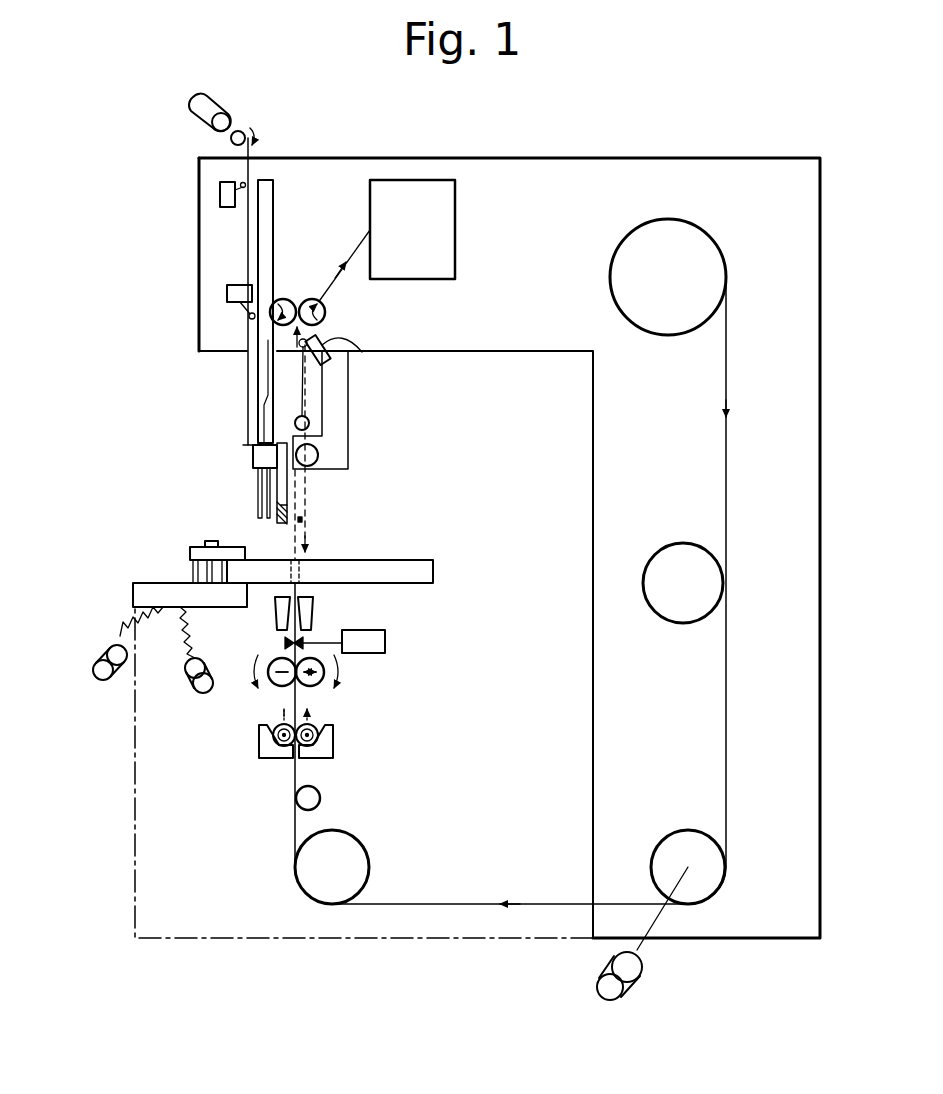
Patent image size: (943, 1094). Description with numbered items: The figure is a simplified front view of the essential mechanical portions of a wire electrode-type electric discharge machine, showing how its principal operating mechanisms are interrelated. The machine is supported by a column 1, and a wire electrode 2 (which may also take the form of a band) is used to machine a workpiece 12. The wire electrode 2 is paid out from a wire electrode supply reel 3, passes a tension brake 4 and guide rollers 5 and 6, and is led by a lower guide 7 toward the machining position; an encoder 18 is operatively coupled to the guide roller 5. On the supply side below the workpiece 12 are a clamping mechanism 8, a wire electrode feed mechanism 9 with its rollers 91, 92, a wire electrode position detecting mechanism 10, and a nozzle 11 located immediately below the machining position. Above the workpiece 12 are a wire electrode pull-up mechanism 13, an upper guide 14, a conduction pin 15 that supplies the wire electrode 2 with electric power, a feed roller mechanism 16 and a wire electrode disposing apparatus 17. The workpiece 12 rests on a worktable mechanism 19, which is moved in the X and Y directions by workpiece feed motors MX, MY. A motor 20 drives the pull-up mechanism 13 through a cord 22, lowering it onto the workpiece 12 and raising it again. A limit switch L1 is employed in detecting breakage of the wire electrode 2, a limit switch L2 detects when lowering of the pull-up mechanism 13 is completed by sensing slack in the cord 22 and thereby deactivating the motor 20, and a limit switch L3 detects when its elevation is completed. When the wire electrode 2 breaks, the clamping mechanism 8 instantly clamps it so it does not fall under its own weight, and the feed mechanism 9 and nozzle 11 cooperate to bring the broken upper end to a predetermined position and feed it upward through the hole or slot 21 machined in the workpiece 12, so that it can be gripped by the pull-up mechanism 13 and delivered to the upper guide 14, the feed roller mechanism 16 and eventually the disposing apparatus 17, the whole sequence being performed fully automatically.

The column 1 is at (752, 920).
The wire electrode 2 is at (727, 480).
The wire electrode supply reel 3 is at (665, 302).
The tension brake 4 is at (682, 620).
The guide roller 5 is at (680, 850).
The guide roller 6 is at (356, 872).
The lower guide 7 is at (320, 797).
The clamping mechanism 8 is at (333, 748).
The wire electrode feed mechanism 9 is at (315, 700).
The feed roller 91 is at (280, 688).
The feed roller 92 is at (312, 688).
The wire electrode position detecting mechanism 10 is at (385, 643).
The nozzle 11 is at (313, 614).
The workpiece 12 is at (400, 566).
The wire electrode pull-up mechanism 13 is at (277, 522).
The upper guide 14 is at (307, 455).
The conduction pin 15 is at (282, 423).
The feed roller mechanism 16 is at (325, 316).
The wire electrode disposing apparatus 17 is at (422, 272).
The encoder 18 is at (620, 1000).
The worktable mechanism 19 is at (174, 584).
The motor 20 is at (230, 108).
The hole or slot 21 is at (297, 578).
The cord 22 is at (258, 248).
The limit switch L1 is at (362, 352).
The limit switch L2 is at (222, 203).
The limit switch L3 is at (226, 302).
The workpiece feed motor MX is at (103, 680).
The workpiece feed motor MY is at (203, 693).